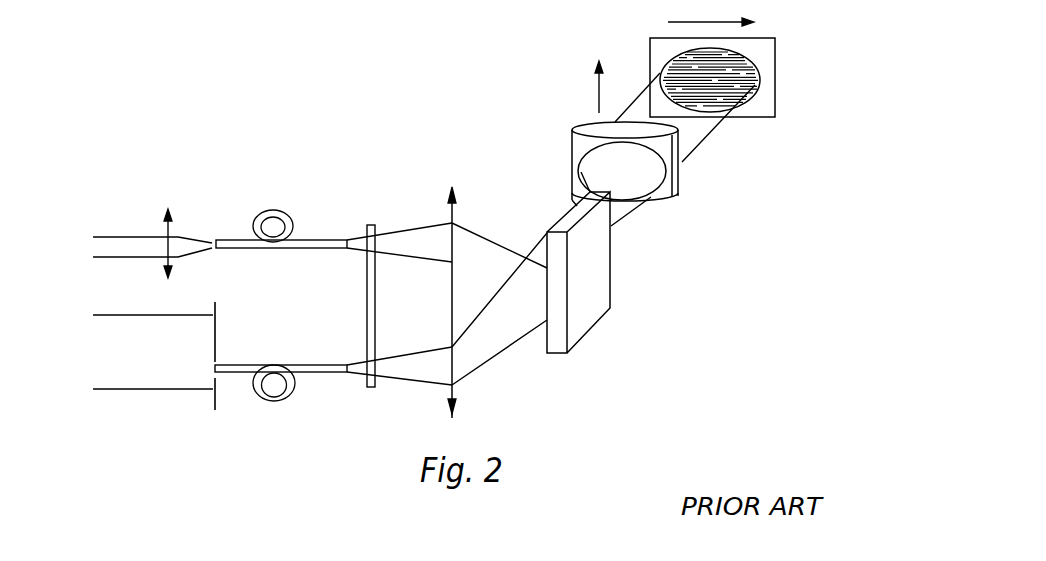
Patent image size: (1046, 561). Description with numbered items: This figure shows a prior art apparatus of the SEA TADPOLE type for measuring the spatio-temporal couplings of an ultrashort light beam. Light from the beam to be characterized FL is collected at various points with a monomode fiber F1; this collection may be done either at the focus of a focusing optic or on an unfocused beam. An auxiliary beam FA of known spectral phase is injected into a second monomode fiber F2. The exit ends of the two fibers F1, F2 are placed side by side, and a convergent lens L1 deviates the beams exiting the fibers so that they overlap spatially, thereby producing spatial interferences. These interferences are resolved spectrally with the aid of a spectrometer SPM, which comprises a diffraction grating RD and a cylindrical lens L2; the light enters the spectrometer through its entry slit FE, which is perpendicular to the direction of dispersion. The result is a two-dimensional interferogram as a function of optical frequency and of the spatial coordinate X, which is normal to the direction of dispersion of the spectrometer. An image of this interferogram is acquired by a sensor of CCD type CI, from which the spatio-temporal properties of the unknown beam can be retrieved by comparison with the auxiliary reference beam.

The auxiliary beam FA is at (134, 236).
The beam to be characterized FL is at (134, 390).
The monomode fiber F1 is at (274, 401).
The second monomode fiber F2 is at (273, 210).
The entry slit of the spectrometer FE is at (371, 223).
The convergent lens L1 is at (455, 413).
The diffraction grating RD is at (583, 313).
The cylindrical lens L2 is at (679, 185).
The spectrometer SPM is at (672, 257).
The sensor of CCD type CI is at (749, 62).
The spatial coordinate X is at (586, 86).